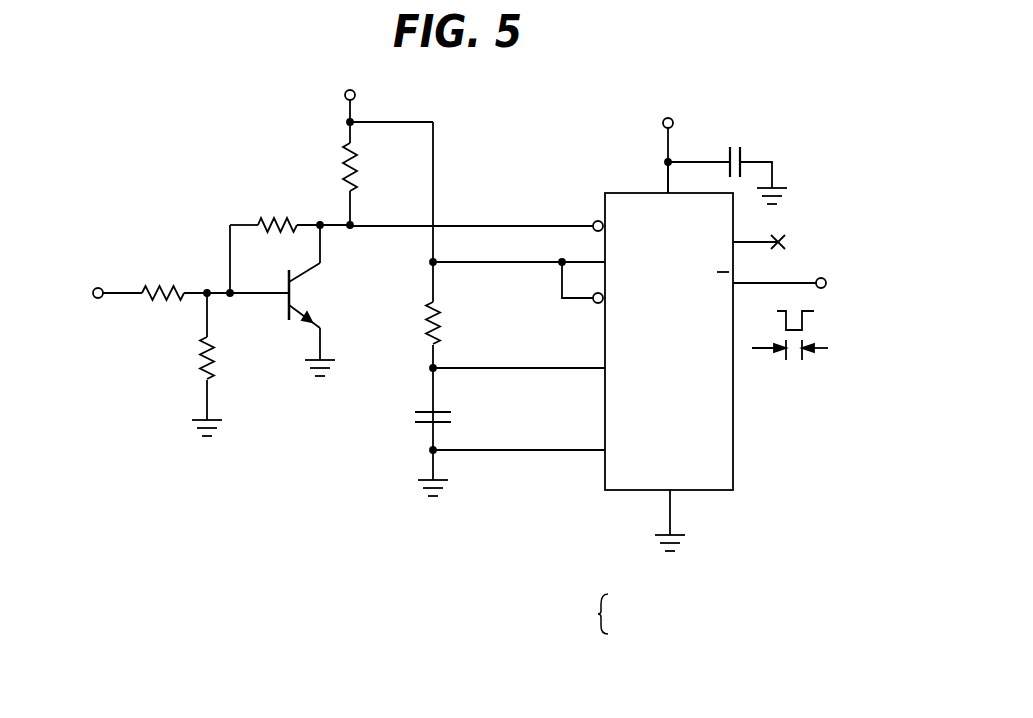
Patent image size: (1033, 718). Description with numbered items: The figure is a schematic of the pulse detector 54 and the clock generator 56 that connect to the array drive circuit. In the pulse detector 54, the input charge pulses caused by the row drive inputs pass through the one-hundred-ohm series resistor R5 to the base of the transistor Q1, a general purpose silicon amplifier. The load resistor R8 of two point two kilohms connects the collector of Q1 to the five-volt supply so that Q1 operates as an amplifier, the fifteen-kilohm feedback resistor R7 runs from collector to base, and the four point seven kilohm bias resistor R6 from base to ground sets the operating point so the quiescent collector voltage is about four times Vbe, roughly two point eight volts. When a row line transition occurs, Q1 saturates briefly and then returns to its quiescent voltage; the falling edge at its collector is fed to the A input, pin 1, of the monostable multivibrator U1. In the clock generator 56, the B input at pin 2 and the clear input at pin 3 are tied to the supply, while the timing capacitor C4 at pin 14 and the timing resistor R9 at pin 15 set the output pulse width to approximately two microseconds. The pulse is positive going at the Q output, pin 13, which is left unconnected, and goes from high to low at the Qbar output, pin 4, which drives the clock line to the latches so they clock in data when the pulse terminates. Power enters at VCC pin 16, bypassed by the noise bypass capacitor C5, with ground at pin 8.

The pulse detector 54 is at (185, 190).
The clock generator 56 is at (518, 190).
The series resistor R5 is at (164, 293).
The bias resistor R6 is at (215, 358).
The feedback resistor R7 is at (277, 226).
The load resistor R8 is at (361, 167).
The timing resistor R9 is at (439, 323).
The transistor Q1 is at (328, 276).
The timing capacitor C4 is at (458, 409).
The noise bypass capacitor C5 is at (728, 143).
The monostable multivibrator U1 is at (696, 371).
The U1 pin 1 (A input) 1 is at (590, 216).
The U1 pin 2 (B input) 2 is at (591, 249).
The U1 pin 3 (CL input) 3 is at (590, 288).
The U1 pin 4 (Q-bar output) 4 is at (774, 271).
The U1 pin 8 (GND) 8 is at (676, 512).
The U1 pin 13 (Q output) 13 is at (755, 229).
The U1 pin 14 (CEXT) 14 is at (592, 437).
The U1 pin 15 (RCEXT) 15 is at (592, 355).
The U1 pin 16 (VCC) 16 is at (679, 177).